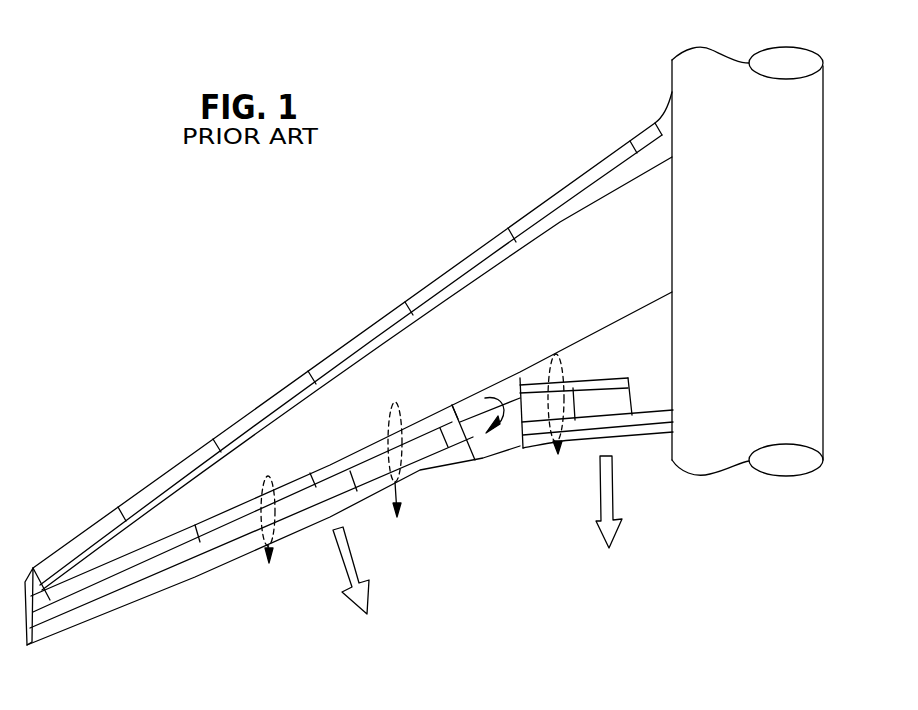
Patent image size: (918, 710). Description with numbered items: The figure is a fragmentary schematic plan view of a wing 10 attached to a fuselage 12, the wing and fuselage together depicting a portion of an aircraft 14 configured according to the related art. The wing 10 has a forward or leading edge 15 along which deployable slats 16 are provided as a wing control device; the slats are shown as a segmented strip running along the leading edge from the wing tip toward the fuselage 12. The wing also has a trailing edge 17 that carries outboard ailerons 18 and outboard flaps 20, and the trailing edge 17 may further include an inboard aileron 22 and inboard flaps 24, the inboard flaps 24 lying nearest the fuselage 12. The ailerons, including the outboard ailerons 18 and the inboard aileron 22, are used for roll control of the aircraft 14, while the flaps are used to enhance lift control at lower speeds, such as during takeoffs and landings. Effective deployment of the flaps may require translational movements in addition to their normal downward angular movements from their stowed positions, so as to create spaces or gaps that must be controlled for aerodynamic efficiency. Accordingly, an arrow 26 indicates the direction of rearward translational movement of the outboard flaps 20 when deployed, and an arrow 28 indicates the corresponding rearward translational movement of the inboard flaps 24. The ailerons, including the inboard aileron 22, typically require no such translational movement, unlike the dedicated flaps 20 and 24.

The wing 10 is at (106, 473).
The fuselage 12 is at (672, 80).
The aircraft 14 is at (785, 486).
The leading edge 15 is at (273, 393).
The deployable slats 16 is at (586, 184).
The trailing edge 17 is at (247, 557).
The outboard ailerons 18 is at (127, 593).
The outboard flaps 20 is at (433, 480).
The inboard aileron 22 is at (503, 454).
The inboard flaps 24 is at (632, 432).
The arrow 26 is at (351, 593).
The arrow 28 is at (599, 520).